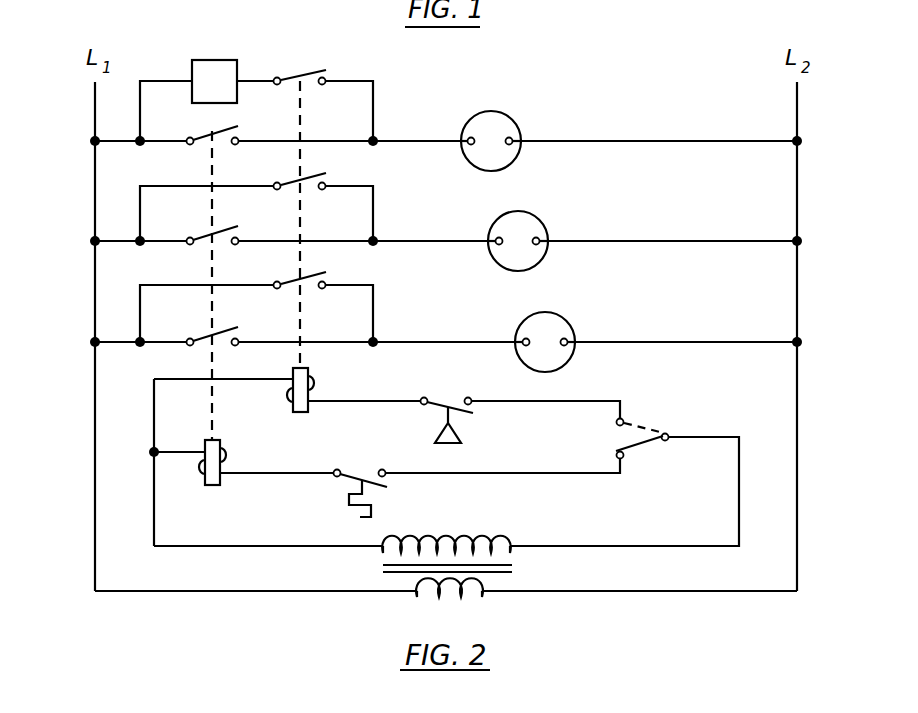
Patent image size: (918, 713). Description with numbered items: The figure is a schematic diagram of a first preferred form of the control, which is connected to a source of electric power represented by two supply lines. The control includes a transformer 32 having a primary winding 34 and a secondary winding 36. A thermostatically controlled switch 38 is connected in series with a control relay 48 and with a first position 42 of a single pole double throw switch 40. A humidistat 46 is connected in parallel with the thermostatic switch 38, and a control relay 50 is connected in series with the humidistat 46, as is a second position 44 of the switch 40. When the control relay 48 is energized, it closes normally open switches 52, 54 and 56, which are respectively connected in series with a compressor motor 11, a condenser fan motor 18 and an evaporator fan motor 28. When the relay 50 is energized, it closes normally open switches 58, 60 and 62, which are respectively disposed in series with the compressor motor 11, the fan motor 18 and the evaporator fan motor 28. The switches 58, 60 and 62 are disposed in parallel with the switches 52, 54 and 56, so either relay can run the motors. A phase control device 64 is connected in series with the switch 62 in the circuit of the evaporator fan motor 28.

The compressor motor 11 is at (562, 317).
The condenser fan motor 18 is at (535, 215).
The evaporator fan motor 28 is at (508, 115).
The transformer 32 is at (355, 570).
The primary winding 34 is at (465, 595).
The secondary winding 36 is at (478, 537).
The thermostatically controlled switch 38 is at (370, 488).
The single pole double throw switch 40 is at (672, 421).
The first position of single pole double throw switch 42 is at (622, 460).
The second position of single pole double throw switch 44 is at (623, 417).
The humidistat 46 is at (460, 413).
The control relay 48 is at (222, 443).
The control relay 50 is at (308, 370).
The normally open switch 52 is at (222, 329).
The normally open switch 54 is at (222, 228).
The normally open switch 56 is at (222, 128).
The normally open switch 58 is at (310, 278).
The normally open switch 60 is at (310, 177).
The normally open switch 62 is at (302, 72).
The phase control device 64 is at (220, 50).